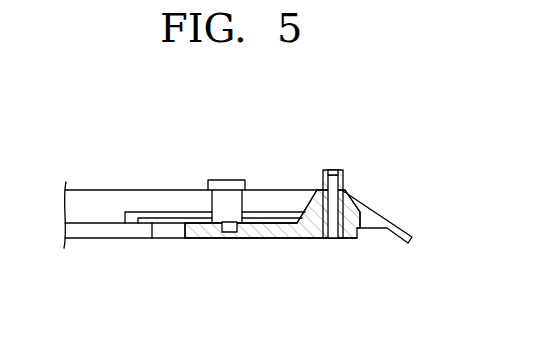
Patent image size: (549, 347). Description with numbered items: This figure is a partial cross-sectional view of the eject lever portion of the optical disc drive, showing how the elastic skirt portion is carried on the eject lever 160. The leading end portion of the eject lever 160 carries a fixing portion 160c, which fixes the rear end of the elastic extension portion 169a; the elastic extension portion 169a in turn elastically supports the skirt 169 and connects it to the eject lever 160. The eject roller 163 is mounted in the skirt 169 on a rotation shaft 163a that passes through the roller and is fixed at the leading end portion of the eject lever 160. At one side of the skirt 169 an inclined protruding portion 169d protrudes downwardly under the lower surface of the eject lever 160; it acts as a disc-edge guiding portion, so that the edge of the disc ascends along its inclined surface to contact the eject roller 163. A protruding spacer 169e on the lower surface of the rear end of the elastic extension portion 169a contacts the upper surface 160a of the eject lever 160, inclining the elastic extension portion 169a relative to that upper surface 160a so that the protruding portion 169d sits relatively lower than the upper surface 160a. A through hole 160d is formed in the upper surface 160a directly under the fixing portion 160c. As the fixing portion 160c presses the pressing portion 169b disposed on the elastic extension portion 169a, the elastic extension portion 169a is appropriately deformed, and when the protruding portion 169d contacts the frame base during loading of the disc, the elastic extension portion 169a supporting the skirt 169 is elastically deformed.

The eject lever 160 is at (88, 189).
The upper surface of the eject lever 160a is at (122, 238).
The fixing portion 160c is at (227, 181).
The through hole 160d is at (222, 239).
The eject roller 163 is at (343, 180).
The rotation shaft 163a is at (335, 169).
The skirt 169 is at (371, 206).
The elastic extension portion 169a is at (281, 226).
The pressing portion 169b is at (238, 203).
The protruding portion 169d is at (386, 222).
The protruding spacer 169e is at (123, 221).